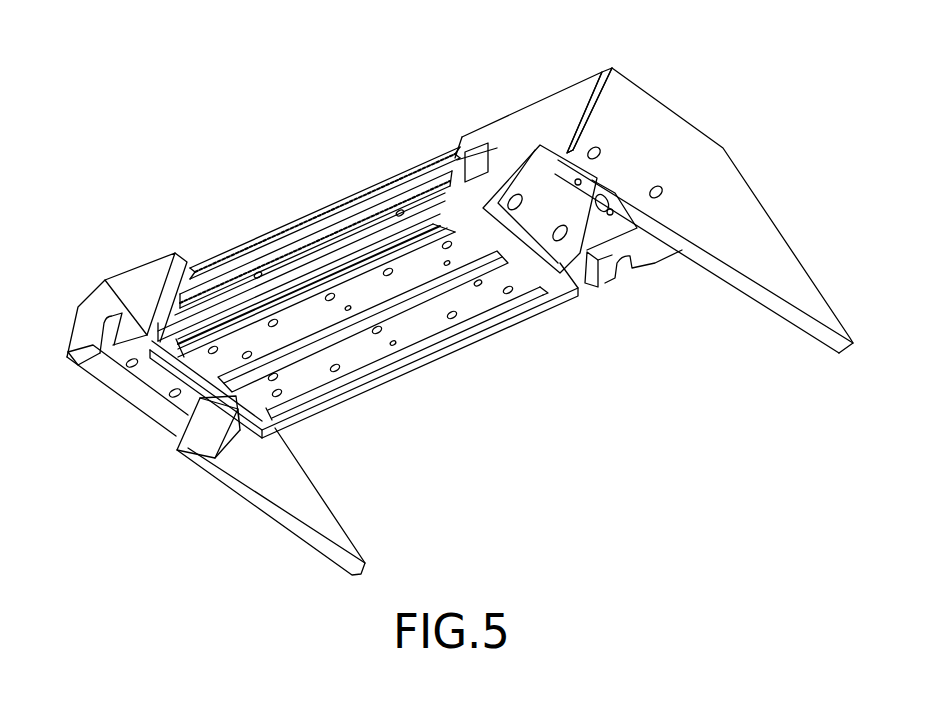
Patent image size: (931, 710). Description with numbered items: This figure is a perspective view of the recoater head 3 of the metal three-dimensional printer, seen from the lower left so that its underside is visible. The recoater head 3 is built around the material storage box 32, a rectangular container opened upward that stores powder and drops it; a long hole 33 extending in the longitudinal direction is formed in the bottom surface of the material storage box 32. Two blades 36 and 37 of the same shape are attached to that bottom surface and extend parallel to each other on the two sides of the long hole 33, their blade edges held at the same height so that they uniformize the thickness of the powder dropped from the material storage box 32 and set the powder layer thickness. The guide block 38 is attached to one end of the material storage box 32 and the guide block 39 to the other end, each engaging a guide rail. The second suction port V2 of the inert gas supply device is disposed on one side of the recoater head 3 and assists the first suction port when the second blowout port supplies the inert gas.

The recoater head 3 is at (667, 66).
The material storage box 32 is at (187, 371).
The long hole 33 is at (347, 333).
The blade 36 is at (437, 350).
The blade 37 is at (297, 280).
The guide block 38 is at (133, 273).
The guide block 39 is at (510, 123).
The second suction port V2 is at (340, 205).